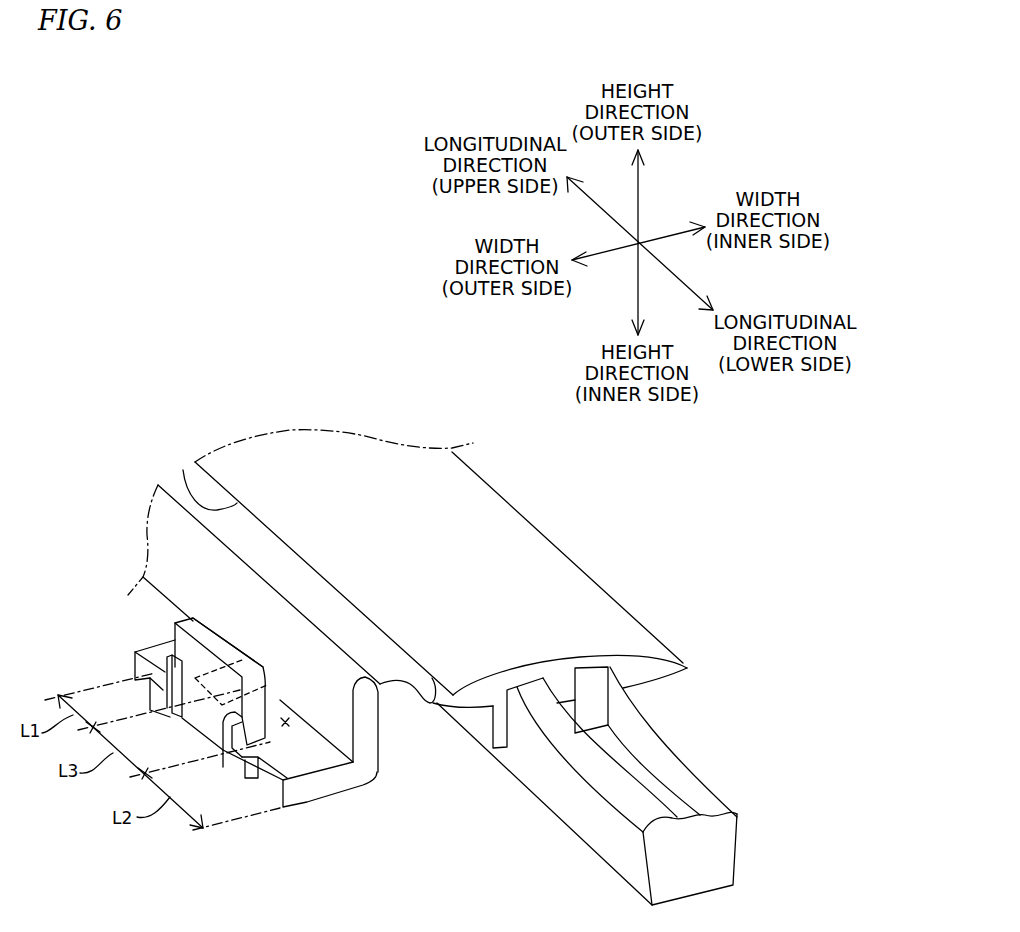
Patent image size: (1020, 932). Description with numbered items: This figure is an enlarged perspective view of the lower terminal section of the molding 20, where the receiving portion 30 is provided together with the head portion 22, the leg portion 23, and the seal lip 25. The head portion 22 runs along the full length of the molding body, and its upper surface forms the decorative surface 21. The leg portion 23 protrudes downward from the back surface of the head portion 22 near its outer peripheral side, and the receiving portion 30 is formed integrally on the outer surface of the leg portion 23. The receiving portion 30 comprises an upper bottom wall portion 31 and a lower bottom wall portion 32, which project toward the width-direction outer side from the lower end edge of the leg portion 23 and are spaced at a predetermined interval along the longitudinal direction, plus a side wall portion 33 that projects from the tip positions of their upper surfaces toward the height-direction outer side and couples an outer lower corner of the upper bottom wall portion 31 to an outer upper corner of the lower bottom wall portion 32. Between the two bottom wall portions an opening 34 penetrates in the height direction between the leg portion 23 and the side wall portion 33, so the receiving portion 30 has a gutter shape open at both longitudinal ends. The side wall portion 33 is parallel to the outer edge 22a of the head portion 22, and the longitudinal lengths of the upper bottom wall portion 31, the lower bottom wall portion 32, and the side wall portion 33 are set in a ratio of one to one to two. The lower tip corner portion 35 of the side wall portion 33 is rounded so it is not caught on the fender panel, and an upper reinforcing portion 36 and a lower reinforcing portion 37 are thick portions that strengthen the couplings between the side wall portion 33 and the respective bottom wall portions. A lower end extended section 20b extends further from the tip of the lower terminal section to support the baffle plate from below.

The molding 20 is at (378, 423).
The lower end extended section 20b is at (678, 780).
The decorative surface 21 is at (445, 547).
The head portion 22 is at (262, 455).
The outer edge 22a is at (183, 470).
The leg portion 23 is at (380, 738).
The seal lip 25 is at (230, 538).
The receiving portion 30 is at (350, 810).
The upper bottom wall portion 31 is at (155, 643).
The lower bottom wall portion 32 is at (263, 787).
The side wall portion 33 is at (215, 637).
The opening 34 is at (287, 723).
The corner portion 35 is at (247, 677).
The upper reinforcing portion 36 is at (155, 695).
The lower reinforcing portion 37 is at (230, 767).